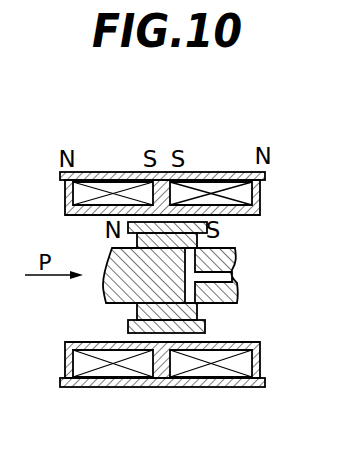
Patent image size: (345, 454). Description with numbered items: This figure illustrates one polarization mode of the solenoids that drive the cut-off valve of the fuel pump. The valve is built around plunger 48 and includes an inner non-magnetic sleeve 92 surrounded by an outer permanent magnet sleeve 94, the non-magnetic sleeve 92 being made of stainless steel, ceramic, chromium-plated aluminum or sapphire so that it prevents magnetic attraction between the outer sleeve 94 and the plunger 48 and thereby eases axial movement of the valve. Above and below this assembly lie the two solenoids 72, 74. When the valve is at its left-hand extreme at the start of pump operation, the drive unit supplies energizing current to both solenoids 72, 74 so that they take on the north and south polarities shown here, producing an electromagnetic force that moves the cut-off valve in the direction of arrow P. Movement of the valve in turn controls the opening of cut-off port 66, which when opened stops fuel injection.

The solenoid 72 is at (112, 186).
The solenoid 74 is at (216, 182).
The plunger 48 is at (226, 262).
The cut-off port 66 is at (190, 292).
The inner non-magnetic sleeve 92 is at (205, 321).
The outer permanent magnet sleeve 94 is at (178, 378).